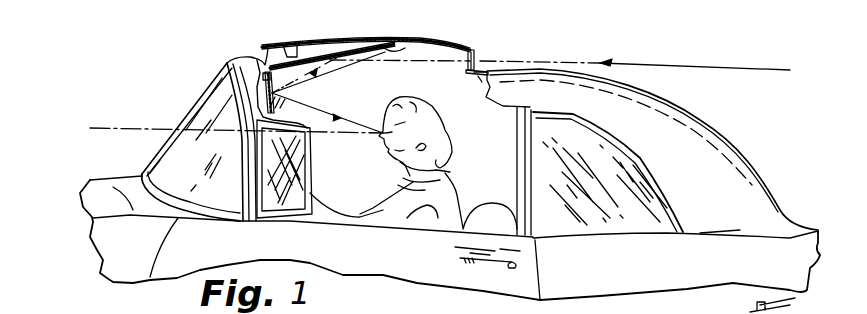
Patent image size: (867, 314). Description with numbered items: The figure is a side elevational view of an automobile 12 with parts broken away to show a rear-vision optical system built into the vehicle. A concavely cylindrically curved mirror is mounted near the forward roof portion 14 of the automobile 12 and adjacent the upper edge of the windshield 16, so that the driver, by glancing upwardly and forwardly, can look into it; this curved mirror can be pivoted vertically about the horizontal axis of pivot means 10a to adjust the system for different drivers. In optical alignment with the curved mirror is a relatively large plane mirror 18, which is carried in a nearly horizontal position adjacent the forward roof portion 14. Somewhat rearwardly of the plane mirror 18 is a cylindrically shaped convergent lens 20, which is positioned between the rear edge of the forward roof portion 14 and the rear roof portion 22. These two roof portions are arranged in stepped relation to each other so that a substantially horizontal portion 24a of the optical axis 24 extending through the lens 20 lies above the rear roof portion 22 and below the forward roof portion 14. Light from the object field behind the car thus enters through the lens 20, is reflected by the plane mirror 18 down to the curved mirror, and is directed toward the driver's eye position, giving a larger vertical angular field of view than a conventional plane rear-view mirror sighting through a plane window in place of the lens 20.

The pivot means 10a is at (258, 51).
The automobile 12 is at (114, 270).
The forward roof portion 14 is at (252, 52).
The windshield 16 is at (213, 81).
The plane mirror 18 is at (405, 47).
The convergent lens 20 is at (480, 62).
The rear roof portion 22 is at (568, 77).
The optical axis 24 is at (738, 69).
The substantially horizontal portion of the optical axis 24a is at (468, 44).